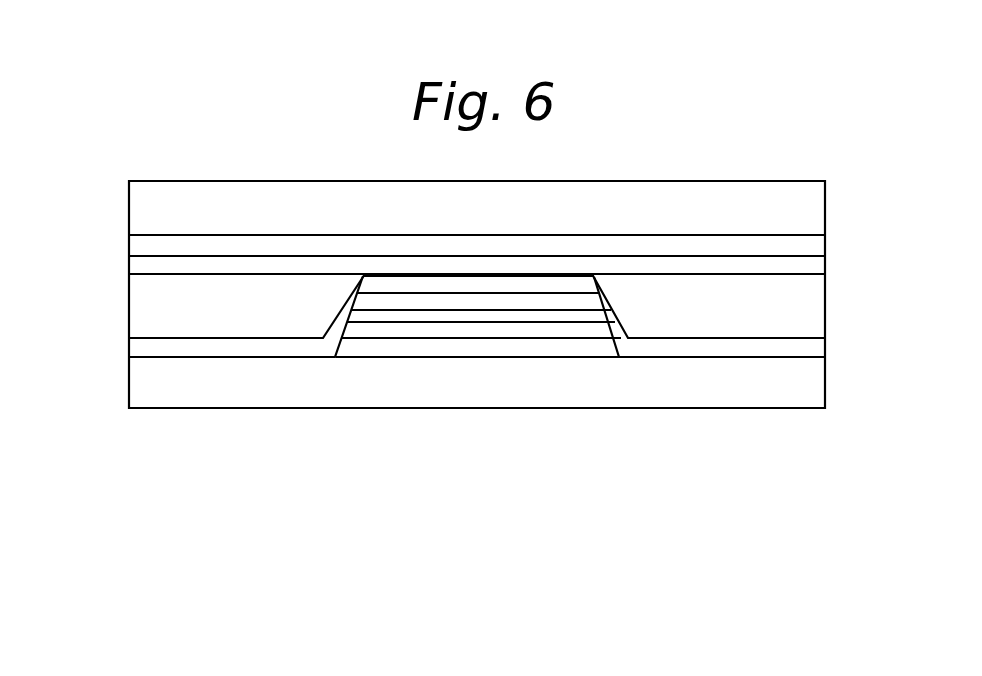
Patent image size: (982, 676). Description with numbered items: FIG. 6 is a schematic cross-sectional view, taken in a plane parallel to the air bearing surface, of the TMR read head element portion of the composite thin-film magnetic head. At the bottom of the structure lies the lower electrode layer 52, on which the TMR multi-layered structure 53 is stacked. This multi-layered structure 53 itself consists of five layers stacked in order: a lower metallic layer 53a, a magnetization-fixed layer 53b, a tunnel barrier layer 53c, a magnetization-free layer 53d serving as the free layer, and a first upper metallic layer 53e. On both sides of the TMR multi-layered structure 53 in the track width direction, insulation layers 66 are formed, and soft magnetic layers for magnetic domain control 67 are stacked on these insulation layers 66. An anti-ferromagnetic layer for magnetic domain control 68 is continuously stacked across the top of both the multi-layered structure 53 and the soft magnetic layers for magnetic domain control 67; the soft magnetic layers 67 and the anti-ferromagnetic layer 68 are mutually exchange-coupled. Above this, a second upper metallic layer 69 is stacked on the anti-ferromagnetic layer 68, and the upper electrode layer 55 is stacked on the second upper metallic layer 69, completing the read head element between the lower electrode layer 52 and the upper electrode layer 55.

The upper electrode layer 55 is at (817, 205).
The second upper metallic layer 69 is at (817, 245).
The anti-ferromagnetic layer for magnetic domain control 68 is at (810, 267).
The soft magnetic layers for magnetic domain control 67 is at (807, 300).
The insulation layers 66 is at (815, 347).
The lower electrode layer 52 is at (812, 385).
The TMR multi-layered structure 53 is at (480, 400).
The lower metallic layer 53a is at (372, 345).
The magnetization-fixed layer 53b is at (432, 328).
The tunnel barrier layer 53c is at (485, 317).
The magnetization-free layer 53d is at (522, 300).
The first upper metallic layer 53e is at (495, 372).